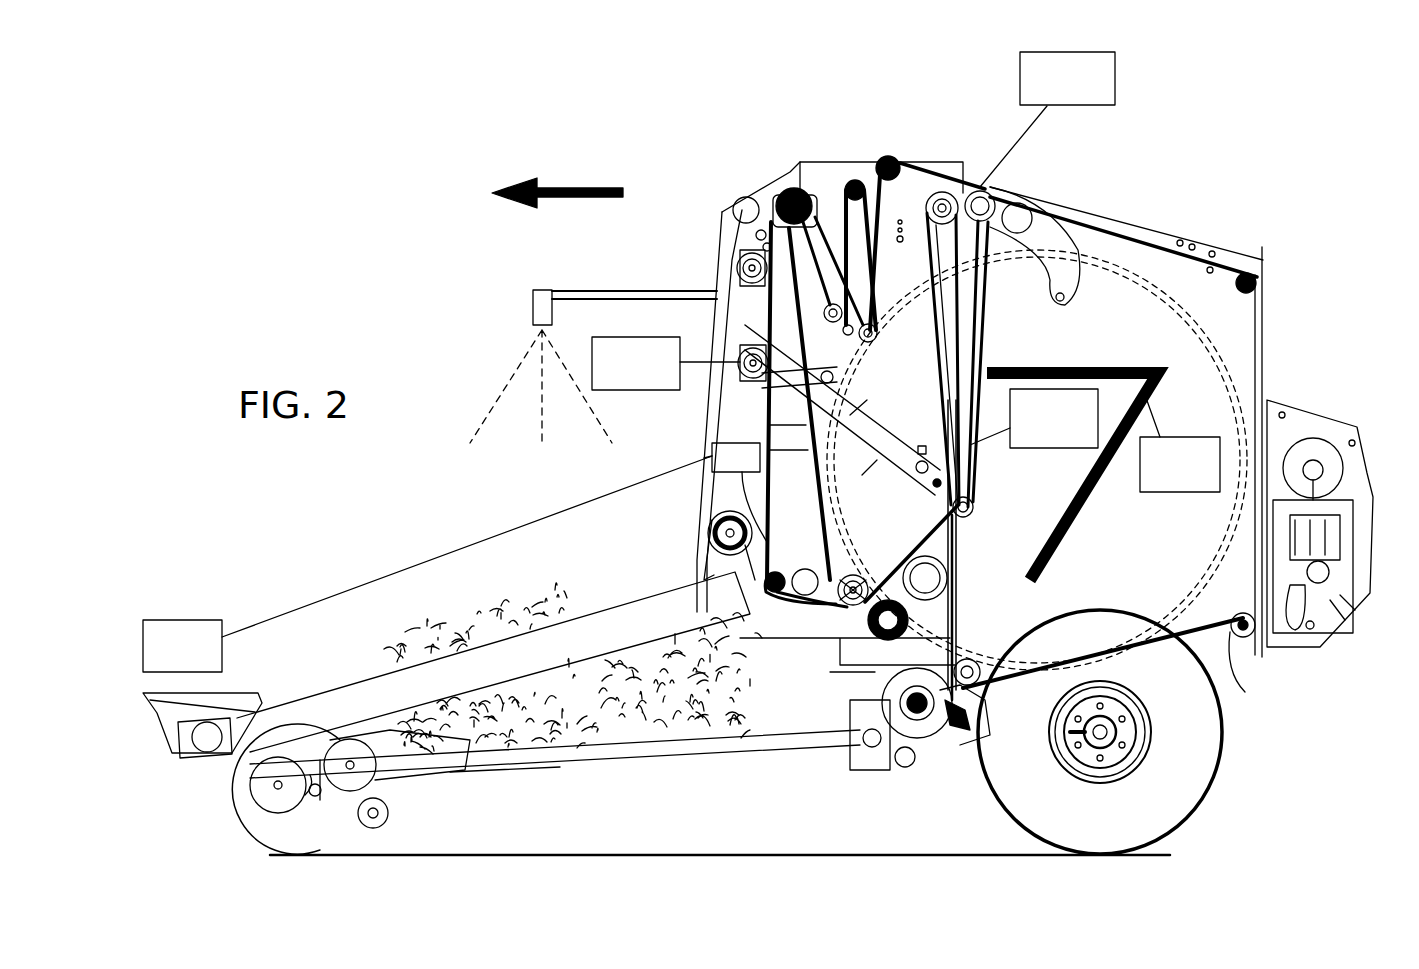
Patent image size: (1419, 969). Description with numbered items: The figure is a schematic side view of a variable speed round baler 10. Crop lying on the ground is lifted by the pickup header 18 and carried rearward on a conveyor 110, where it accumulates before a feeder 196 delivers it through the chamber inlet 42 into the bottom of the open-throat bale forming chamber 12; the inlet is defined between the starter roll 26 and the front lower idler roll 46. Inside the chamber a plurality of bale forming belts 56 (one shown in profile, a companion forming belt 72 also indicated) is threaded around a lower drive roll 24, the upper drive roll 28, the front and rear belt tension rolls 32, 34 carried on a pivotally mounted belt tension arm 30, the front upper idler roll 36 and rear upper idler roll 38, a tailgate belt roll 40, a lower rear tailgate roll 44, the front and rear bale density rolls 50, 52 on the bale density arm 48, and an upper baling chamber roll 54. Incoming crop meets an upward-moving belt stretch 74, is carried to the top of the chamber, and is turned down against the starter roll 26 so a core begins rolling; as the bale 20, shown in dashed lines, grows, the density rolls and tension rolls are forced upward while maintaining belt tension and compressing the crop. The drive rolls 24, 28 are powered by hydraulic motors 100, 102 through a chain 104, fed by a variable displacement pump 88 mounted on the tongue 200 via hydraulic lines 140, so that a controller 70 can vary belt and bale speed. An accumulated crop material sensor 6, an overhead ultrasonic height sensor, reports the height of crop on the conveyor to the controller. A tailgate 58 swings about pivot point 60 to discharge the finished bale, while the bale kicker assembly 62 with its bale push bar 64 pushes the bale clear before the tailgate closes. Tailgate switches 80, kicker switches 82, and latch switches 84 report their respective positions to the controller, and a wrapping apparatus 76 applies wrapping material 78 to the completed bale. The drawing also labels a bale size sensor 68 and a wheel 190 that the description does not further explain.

The accumulated crop material sensor 6 is at (538, 290).
The baler 10 is at (1278, 178).
The bale forming chamber 12 is at (965, 545).
The pickup header 18 is at (330, 840).
The bale 20 is at (925, 556).
The lower drive roll 24 is at (848, 575).
The starter roll 26 is at (913, 613).
The upper drive roll 28 is at (787, 173).
The belt tension arm 30 is at (741, 255).
The front belt tension roll 32 is at (830, 320).
The rear belt tension roll 34 is at (870, 339).
The front upper idler roll 36 is at (852, 183).
The rear upper idler roll 38 is at (889, 164).
The tailgate belt roll 40 is at (1262, 275).
The chamber inlet 42 is at (900, 653).
The lower rear tailgate roll 44 is at (1242, 612).
The front lower idler roll 46 is at (975, 687).
The bale density arm 48 is at (858, 421).
The front bale density roll 50 is at (935, 468).
The rear bale density roll 52 is at (973, 501).
The upper baling chamber roll 54 is at (946, 195).
The bale forming belts 56 is at (812, 491).
The tailgate 58 is at (1228, 680).
The pivot point 60 is at (985, 195).
The bale kicker assembly 62 is at (1017, 366).
The bale push bar 64 is at (1083, 502).
The bale size sensor 68 is at (631, 391).
The controller 70 is at (798, 401).
The forming belt 72 is at (813, 517).
The belt stretch 74 is at (930, 335).
The wrapping apparatus 76 is at (1323, 423).
The wrapping material 78 is at (1323, 473).
The tailgate switches 80 is at (1115, 78).
The kicker switches 82 is at (1185, 437).
The latch switches 84 is at (1060, 449).
The variable displacement pump 88 is at (202, 689).
The hydraulic motor 100 is at (803, 570).
The hydraulic motor 102 is at (759, 224).
The chain 104 is at (770, 187).
The conveyor 110 is at (725, 758).
The hydraulic lines 140 is at (731, 443).
The wheel 190 is at (953, 745).
The feeder 196 is at (930, 725).
The tongue 200 is at (605, 598).